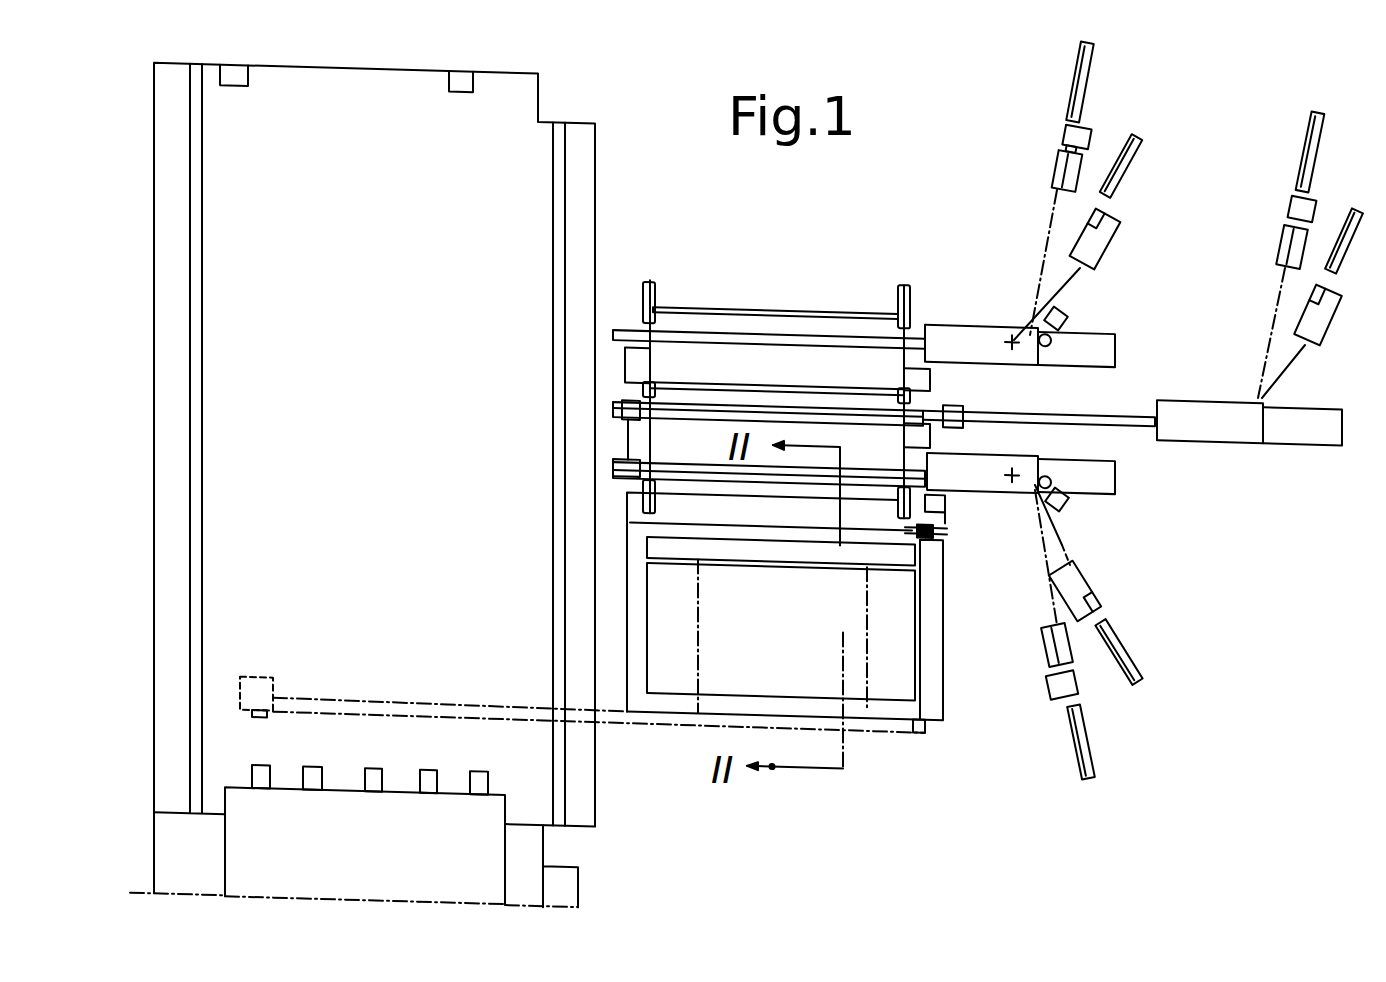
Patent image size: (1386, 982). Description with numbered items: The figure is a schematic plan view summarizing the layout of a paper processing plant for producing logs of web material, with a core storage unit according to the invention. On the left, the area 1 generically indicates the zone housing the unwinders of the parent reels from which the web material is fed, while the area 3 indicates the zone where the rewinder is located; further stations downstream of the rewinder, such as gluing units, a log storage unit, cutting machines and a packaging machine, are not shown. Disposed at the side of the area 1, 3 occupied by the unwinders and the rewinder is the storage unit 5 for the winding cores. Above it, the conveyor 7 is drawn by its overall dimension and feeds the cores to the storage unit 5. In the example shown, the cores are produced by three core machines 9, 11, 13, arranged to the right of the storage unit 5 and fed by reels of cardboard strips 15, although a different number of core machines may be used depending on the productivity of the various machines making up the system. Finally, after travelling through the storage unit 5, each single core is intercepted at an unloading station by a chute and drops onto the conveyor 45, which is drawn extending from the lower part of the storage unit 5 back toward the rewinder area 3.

The area housing the unwinders 1 is at (380, 305).
The rewinder area 3 is at (392, 762).
The storage unit 5 is at (925, 733).
The conveyor 7 is at (745, 303).
The core machine 9 is at (1117, 480).
The core machine 11 is at (1205, 433).
The core machine 13 is at (1117, 345).
The reels of cardboard strips 15 is at (1036, 132).
The conveyor 45 is at (610, 710).